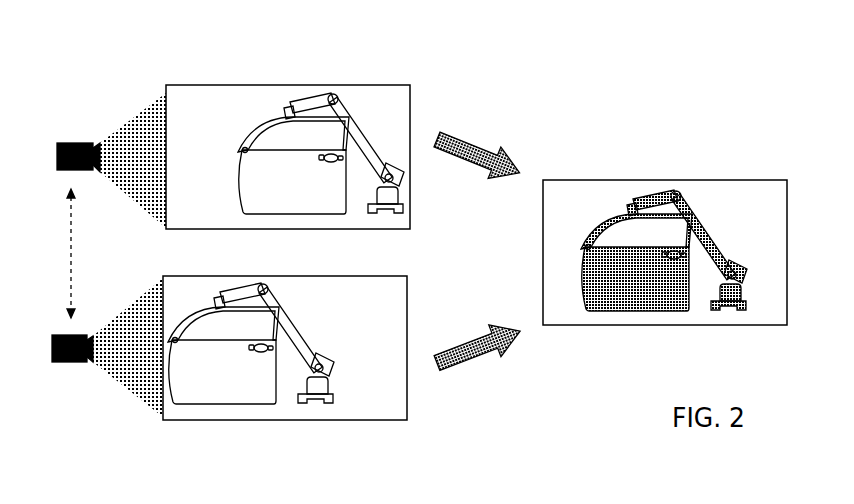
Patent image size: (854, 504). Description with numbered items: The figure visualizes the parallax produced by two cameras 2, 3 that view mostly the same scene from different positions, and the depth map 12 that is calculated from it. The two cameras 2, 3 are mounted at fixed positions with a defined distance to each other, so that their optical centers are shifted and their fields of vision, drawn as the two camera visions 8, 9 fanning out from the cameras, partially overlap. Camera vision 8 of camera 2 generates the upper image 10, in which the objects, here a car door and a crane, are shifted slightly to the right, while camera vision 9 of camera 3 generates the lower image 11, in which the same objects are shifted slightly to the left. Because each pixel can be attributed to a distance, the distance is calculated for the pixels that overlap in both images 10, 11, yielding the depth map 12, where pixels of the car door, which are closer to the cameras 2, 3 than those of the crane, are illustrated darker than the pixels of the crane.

The camera 2 is at (102, 104).
The camera 3 is at (90, 400).
The camera vision 8 is at (151, 134).
The camera vision 9 is at (159, 379).
The upper image 10 is at (312, 126).
The lower image 11 is at (312, 381).
The depth map 12 is at (665, 218).